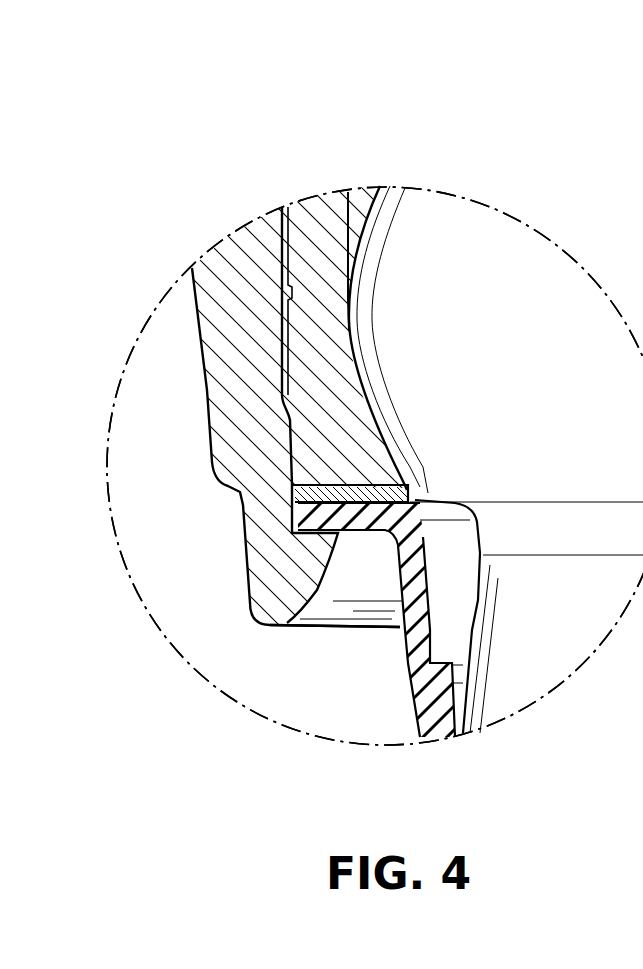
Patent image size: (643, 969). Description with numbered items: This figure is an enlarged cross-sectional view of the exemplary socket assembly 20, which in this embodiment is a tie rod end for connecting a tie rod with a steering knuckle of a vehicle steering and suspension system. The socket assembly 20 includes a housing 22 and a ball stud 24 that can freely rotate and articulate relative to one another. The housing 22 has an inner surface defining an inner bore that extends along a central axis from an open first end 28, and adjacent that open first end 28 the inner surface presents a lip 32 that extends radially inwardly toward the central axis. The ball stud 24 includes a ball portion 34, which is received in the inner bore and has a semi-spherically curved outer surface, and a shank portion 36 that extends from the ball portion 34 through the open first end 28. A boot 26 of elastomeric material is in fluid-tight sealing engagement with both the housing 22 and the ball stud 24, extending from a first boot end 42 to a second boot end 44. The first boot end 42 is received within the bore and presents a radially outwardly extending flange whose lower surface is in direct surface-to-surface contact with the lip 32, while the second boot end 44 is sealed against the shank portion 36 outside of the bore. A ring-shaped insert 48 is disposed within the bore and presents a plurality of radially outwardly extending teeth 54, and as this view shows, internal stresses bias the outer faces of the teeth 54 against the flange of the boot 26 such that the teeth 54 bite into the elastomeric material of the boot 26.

The socket assembly 20 is at (491, 152).
The housing 22 is at (191, 436).
The ball stud 24 is at (593, 668).
The boot 26 is at (388, 610).
The open first end 28 is at (318, 603).
The lip 32 is at (296, 570).
The ball portion 34 is at (522, 260).
The shank portion 36 is at (508, 677).
The first boot end 42 is at (407, 515).
The second boot end 44 is at (427, 699).
The insert 48 is at (358, 485).
The teeth 54 is at (292, 442).